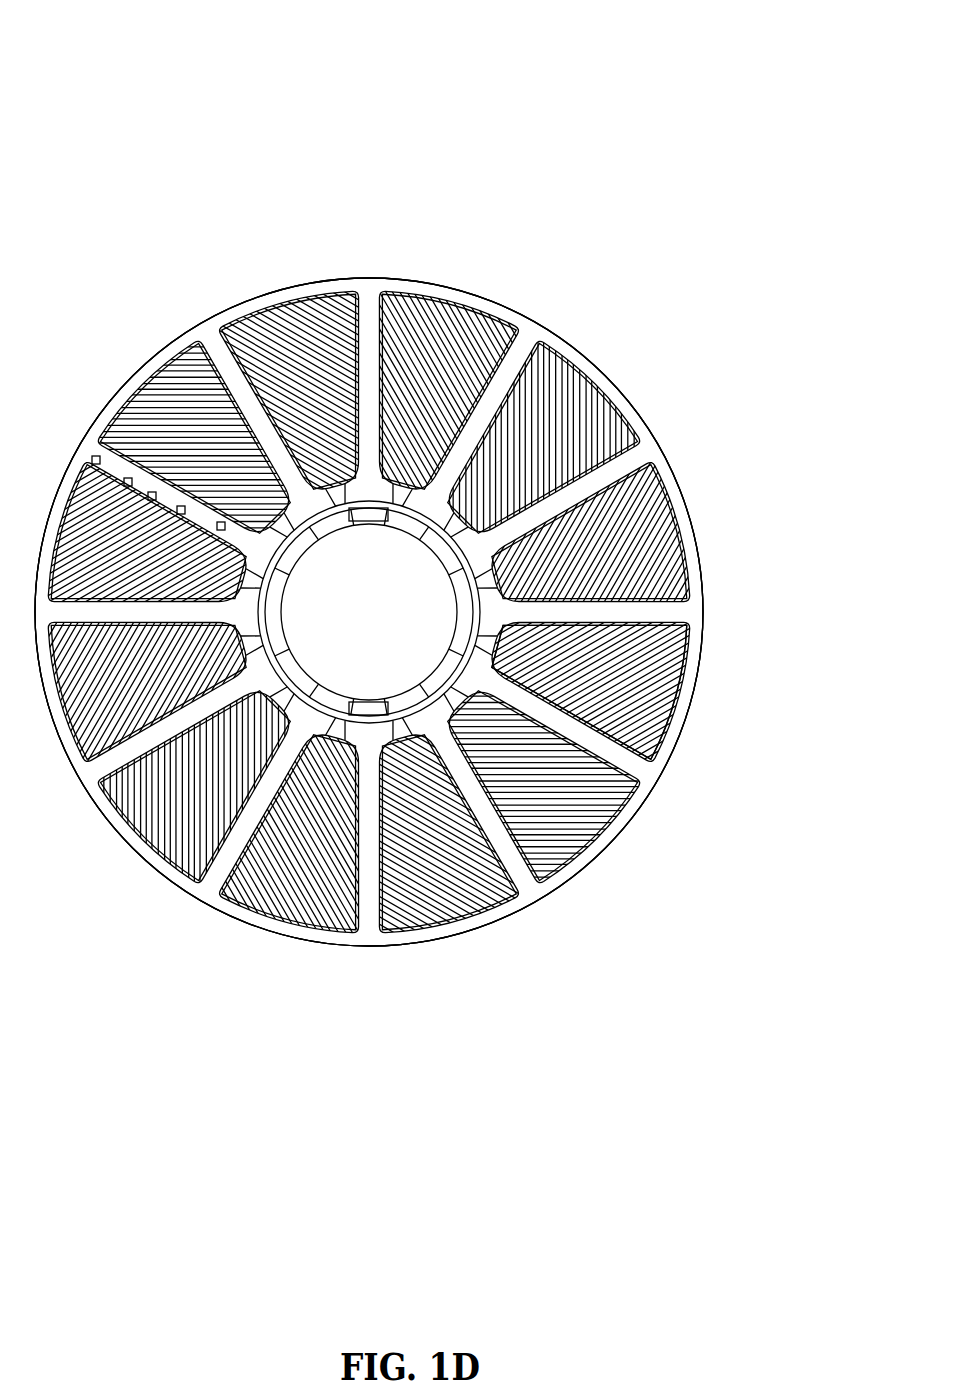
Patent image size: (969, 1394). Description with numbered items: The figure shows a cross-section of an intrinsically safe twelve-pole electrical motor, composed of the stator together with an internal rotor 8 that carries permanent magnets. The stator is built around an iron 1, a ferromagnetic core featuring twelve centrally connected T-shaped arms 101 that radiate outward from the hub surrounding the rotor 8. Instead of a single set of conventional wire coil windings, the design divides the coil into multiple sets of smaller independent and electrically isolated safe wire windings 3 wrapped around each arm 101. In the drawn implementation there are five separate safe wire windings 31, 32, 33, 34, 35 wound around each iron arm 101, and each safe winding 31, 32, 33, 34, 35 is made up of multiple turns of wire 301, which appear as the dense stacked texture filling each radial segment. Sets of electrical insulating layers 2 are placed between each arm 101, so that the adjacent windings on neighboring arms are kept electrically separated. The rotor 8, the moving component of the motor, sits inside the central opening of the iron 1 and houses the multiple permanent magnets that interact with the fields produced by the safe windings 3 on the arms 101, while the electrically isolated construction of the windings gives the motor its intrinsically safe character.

The iron 1 is at (600, 380).
The arm 101 is at (593, 483).
The electrical insulating layer 2 is at (548, 880).
The safe wire winding 3 is at (613, 800).
The turn of wire 301 is at (675, 643).
The rotor 8 is at (428, 557).
The first safe wire winding 31 is at (114, 474).
The second safe wire winding 32 is at (138, 490).
The third safe wire winding 33 is at (164, 504).
The fourth safe wire winding 34 is at (191, 516).
The fifth safe wire winding 35 is at (229, 534).